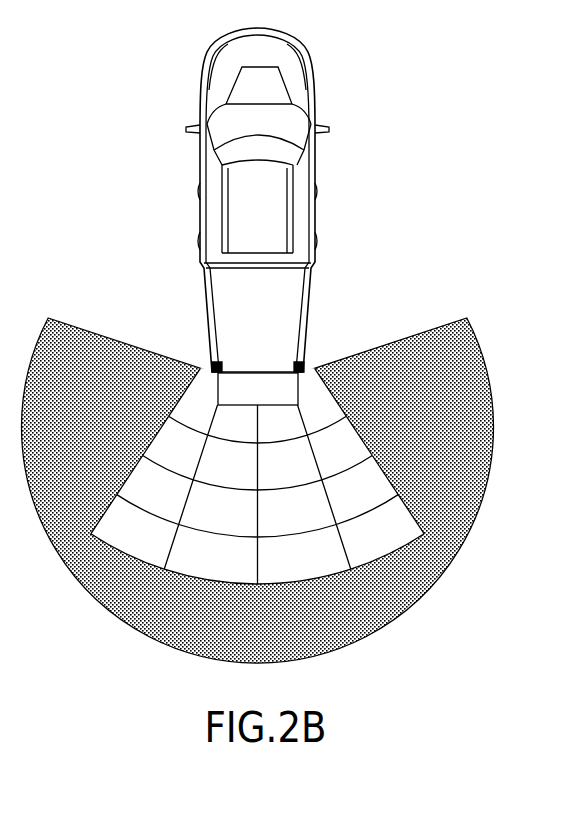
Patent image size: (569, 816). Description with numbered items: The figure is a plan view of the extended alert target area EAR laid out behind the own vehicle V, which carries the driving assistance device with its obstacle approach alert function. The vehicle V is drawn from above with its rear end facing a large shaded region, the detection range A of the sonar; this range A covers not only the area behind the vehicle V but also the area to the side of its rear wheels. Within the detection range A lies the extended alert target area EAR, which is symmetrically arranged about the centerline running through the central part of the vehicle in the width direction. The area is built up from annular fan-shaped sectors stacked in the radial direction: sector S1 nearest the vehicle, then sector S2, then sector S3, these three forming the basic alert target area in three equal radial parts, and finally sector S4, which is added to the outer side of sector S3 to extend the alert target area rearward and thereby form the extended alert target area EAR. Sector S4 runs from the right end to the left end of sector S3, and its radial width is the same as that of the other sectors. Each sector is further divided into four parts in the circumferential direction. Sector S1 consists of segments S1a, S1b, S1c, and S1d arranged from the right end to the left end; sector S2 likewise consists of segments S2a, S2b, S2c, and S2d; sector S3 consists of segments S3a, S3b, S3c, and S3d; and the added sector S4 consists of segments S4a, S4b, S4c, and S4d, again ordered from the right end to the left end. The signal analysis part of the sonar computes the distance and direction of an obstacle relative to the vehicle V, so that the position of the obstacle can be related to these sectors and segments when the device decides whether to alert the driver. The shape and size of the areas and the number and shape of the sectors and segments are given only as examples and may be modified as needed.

The detection range A is at (492, 325).
The extended alert target area EAR is at (345, 393).
The vehicle V is at (320, 187).
The sector S1 is at (181, 396).
The sector S2 is at (155, 431).
The sector S3 is at (130, 473).
The sector S4 is at (103, 512).
The segment S1a is at (324, 417).
The segment S1b is at (283, 427).
The segment S1c is at (233, 427).
The segment S1d is at (191, 417).
The segment S2a is at (347, 460).
The segment S2b is at (290, 472).
The segment S2c is at (225, 472).
The segment S2d is at (169, 459).
The segment S3a is at (367, 503).
The segment S3b is at (297, 519).
The segment S3c is at (218, 519).
The segment S3d is at (148, 502).
The segment S4a is at (387, 546).
The segment S4b is at (304, 566).
The segment S4c is at (210, 566).
The segment S4d is at (127, 545).